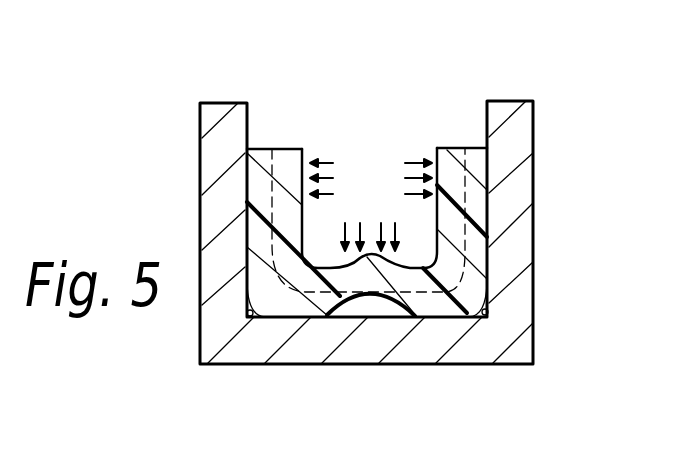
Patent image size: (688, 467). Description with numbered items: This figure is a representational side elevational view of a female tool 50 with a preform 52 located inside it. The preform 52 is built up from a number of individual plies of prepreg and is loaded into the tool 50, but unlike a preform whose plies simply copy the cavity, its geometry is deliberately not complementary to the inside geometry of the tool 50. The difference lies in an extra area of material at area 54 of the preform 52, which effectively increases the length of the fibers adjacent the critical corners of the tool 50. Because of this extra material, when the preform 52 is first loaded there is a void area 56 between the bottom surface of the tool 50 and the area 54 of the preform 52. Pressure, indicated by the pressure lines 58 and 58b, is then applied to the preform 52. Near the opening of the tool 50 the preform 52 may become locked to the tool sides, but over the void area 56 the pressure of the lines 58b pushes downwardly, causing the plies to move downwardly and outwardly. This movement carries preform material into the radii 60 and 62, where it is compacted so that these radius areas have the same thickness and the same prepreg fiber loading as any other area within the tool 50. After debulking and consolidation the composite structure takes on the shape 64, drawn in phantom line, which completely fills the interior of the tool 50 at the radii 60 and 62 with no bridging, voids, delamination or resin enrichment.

The female tool 50 is at (523, 183).
The preform 52 is at (450, 148).
The area of extra material 54 is at (367, 260).
The void area 56 is at (386, 307).
The pressure (arrows) 58 is at (410, 162).
The pressure lines 58b is at (368, 210).
The radius 60 is at (486, 311).
The radius 62 is at (247, 313).
The shape of the composite structure 64 is at (262, 149).